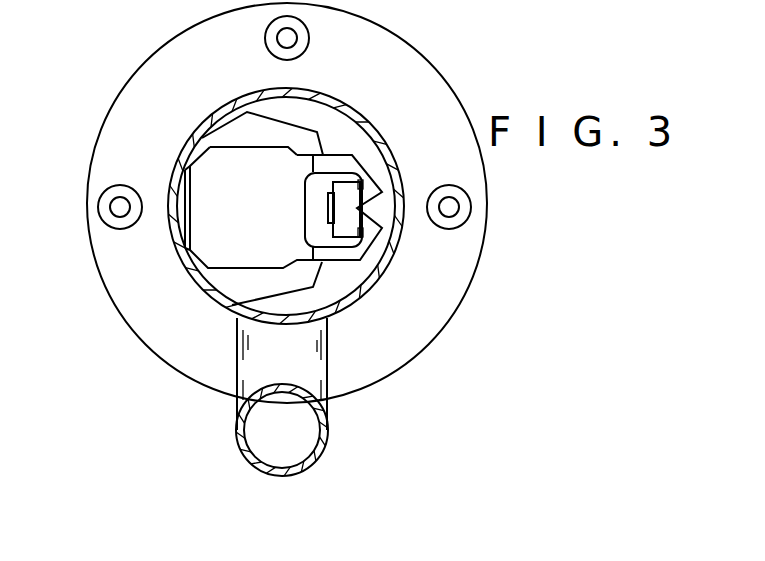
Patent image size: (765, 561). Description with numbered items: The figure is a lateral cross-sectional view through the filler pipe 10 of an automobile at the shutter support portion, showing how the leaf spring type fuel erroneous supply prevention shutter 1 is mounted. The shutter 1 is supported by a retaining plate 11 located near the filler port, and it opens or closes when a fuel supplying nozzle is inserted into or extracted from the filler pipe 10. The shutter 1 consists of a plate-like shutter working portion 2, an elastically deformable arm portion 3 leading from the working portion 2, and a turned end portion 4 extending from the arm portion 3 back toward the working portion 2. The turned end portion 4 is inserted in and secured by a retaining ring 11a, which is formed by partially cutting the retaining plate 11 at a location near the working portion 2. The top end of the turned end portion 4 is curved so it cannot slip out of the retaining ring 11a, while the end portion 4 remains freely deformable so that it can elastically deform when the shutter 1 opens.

The fuel erroneous supply prevention shutter 1 is at (252, 168).
The shutter working portion 2 is at (210, 178).
The arm portion 3 is at (353, 153).
The turned end portion 4 is at (373, 183).
The filler pipe 10 is at (330, 100).
The retaining plate 11 is at (318, 278).
The retaining ring 11a is at (348, 227).